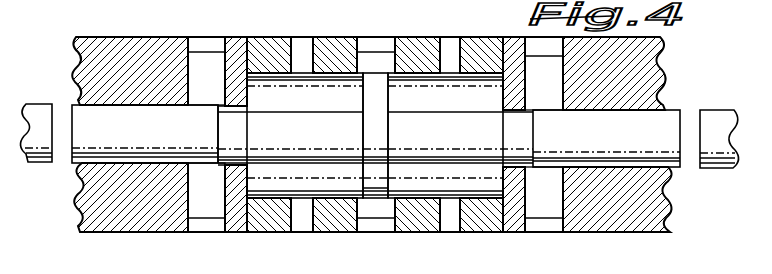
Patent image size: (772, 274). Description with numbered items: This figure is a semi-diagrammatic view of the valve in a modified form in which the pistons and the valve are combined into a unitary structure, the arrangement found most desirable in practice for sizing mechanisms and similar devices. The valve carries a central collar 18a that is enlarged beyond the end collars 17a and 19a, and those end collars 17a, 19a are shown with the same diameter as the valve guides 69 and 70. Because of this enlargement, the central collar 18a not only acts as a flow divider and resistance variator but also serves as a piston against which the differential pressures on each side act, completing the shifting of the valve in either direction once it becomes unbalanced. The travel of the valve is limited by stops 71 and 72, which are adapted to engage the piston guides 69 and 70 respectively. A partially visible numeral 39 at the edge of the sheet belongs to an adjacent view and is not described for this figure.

The bearing 17a is at (205, 147).
The coupling key 18a is at (389, 183).
The bearing 19a is at (550, 150).
The shaft 69 is at (78, 141).
The shaft 70 is at (665, 118).
The shaft sleeve 71 is at (35, 157).
The shaft sleeve 72 is at (704, 117).
The lever 39 is at (64, 7).